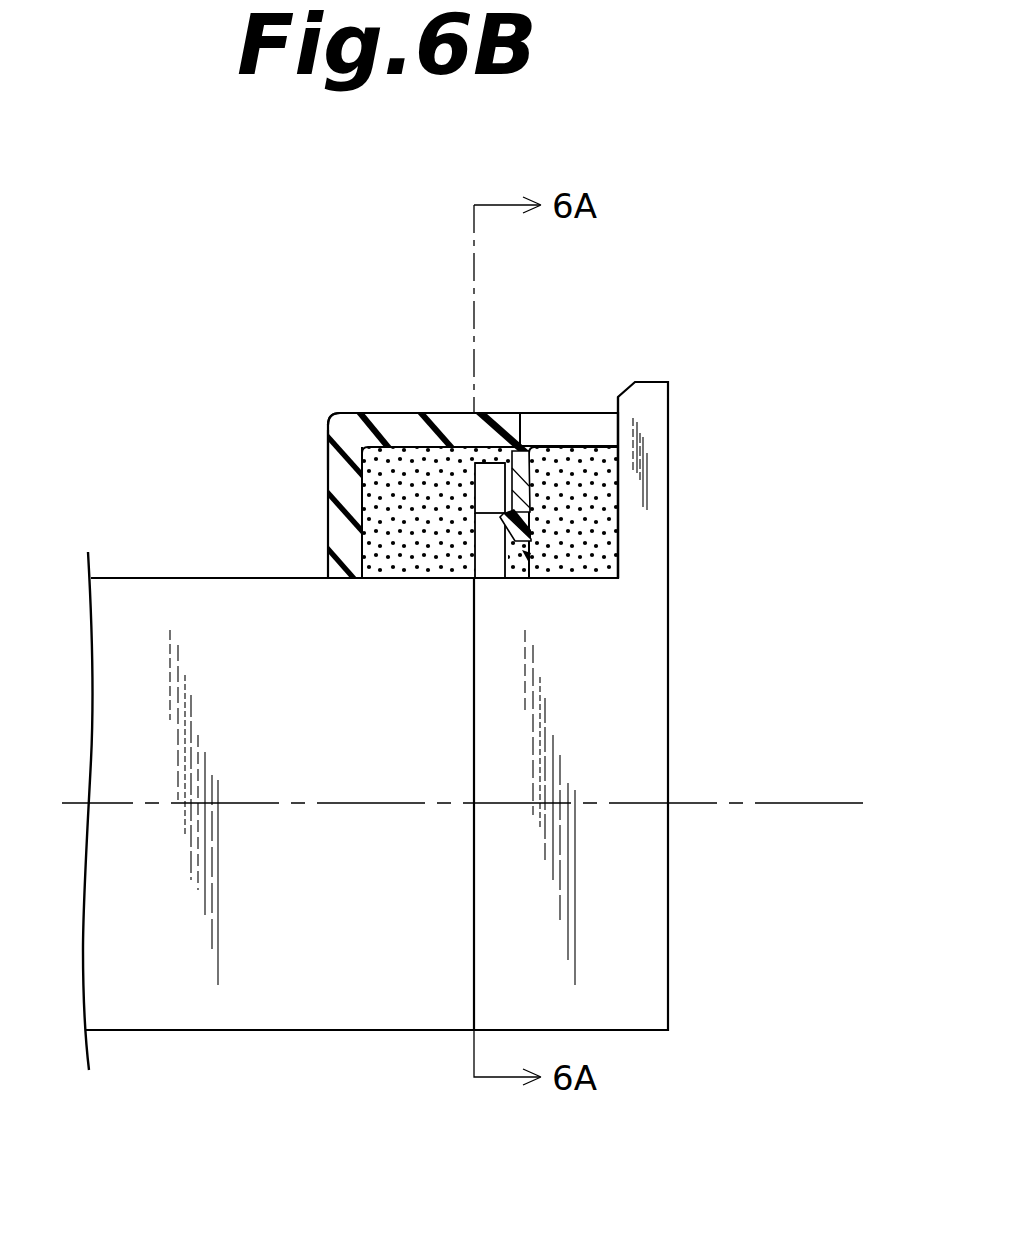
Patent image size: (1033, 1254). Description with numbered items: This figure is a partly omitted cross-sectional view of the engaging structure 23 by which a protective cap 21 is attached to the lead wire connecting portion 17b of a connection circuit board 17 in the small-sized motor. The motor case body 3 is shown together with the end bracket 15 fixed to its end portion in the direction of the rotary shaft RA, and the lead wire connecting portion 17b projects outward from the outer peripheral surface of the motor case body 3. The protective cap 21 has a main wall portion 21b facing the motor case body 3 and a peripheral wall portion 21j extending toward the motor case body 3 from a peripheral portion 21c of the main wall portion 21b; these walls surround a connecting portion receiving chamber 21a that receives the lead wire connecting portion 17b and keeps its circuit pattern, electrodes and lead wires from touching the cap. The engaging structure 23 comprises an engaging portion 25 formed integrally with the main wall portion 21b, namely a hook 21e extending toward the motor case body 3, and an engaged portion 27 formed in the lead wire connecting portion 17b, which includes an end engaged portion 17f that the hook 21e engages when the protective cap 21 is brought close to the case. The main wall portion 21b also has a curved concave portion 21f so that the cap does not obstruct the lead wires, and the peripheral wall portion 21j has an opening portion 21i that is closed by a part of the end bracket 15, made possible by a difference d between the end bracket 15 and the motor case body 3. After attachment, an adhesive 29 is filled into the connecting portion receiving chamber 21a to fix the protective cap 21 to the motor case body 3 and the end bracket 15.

The motor case body 3 is at (178, 1005).
The end bracket 15 is at (610, 960).
The connection circuit board 17 is at (470, 533).
The lead wire connecting portion 17b is at (488, 488).
The end engaged portion 17f is at (482, 457).
The protective cap 21 is at (440, 430).
The connecting portion receiving chamber 21a is at (370, 460).
The main wall portion 21b is at (388, 430).
The peripheral portion 21c is at (332, 417).
The hook 21e is at (530, 532).
The curved concave portion 21f is at (557, 425).
The opening portion 21i is at (588, 445).
The peripheral wall portion 21j is at (327, 445).
The engaging structure 23 is at (523, 552).
The engaging portion 25 is at (532, 513).
The engaged portion 27 is at (497, 470).
The adhesive 29 is at (398, 547).
The difference d is at (620, 458).
The rotary shaft RA is at (782, 803).